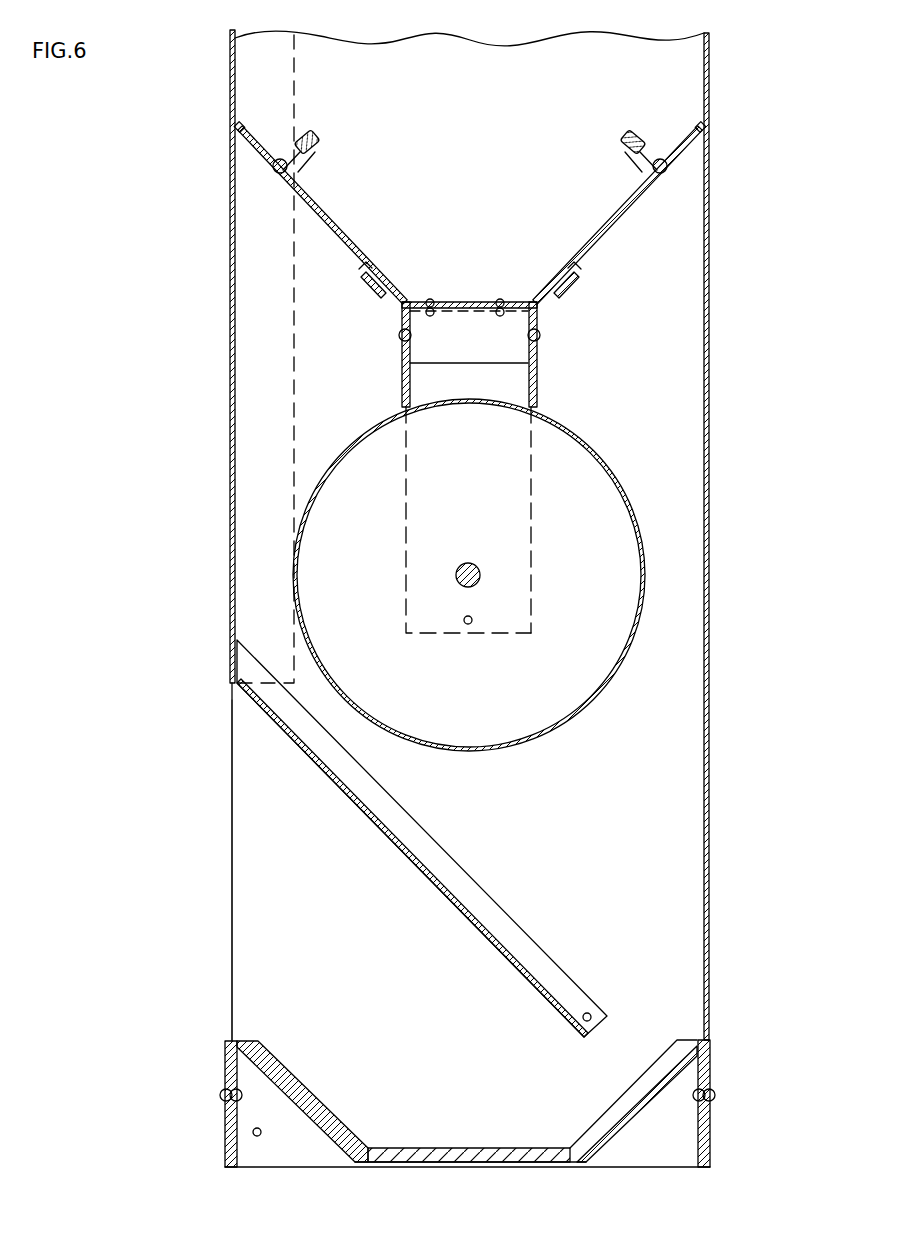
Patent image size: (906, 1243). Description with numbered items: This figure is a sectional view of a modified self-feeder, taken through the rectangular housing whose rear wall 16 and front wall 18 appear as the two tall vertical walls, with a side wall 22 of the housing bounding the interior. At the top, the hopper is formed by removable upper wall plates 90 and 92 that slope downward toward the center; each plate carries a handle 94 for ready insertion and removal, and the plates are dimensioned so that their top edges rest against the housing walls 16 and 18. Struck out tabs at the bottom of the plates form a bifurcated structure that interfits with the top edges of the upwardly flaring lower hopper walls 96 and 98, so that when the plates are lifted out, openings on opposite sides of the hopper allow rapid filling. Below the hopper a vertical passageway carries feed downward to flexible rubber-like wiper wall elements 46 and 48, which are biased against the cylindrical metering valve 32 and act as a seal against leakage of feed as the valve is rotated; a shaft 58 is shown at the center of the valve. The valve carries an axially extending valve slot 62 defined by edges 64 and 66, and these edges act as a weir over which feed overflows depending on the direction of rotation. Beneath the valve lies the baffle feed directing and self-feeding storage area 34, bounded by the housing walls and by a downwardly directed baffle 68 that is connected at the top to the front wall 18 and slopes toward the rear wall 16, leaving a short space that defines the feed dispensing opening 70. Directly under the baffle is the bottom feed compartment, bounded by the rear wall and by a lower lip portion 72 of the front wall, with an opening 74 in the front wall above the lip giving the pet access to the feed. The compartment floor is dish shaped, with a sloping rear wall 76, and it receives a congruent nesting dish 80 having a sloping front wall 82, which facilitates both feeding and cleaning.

The rear wall 16 is at (710, 345).
The front wall 18 is at (229, 432).
The side wall 22 is at (500, 82).
The metering valve 32 is at (645, 596).
The baffle feed directing and self-feeding storage area 34 is at (643, 888).
The wiper wall element 46 is at (400, 390).
The wiper wall element 48 is at (540, 385).
The drum shaft 58 is at (476, 568).
The valve slot 62 is at (475, 466).
The slot edge 64 is at (407, 414).
The slot edge 66 is at (529, 410).
The baffle 68 is at (440, 862).
The feed dispensing opening 70 is at (645, 1033).
The lower lip portion 72 is at (225, 1130).
The opening 74 is at (231, 795).
The sloping rear wall 76 is at (628, 1113).
The dish 80 is at (427, 1146).
The sloping front wall 82 is at (300, 1080).
The upper wall plate 90 is at (327, 228).
The upper wall plate 92 is at (626, 206).
The handle 94 is at (310, 134).
The lower hopper wall 96 is at (394, 301).
The lower hopper wall 98 is at (541, 299).